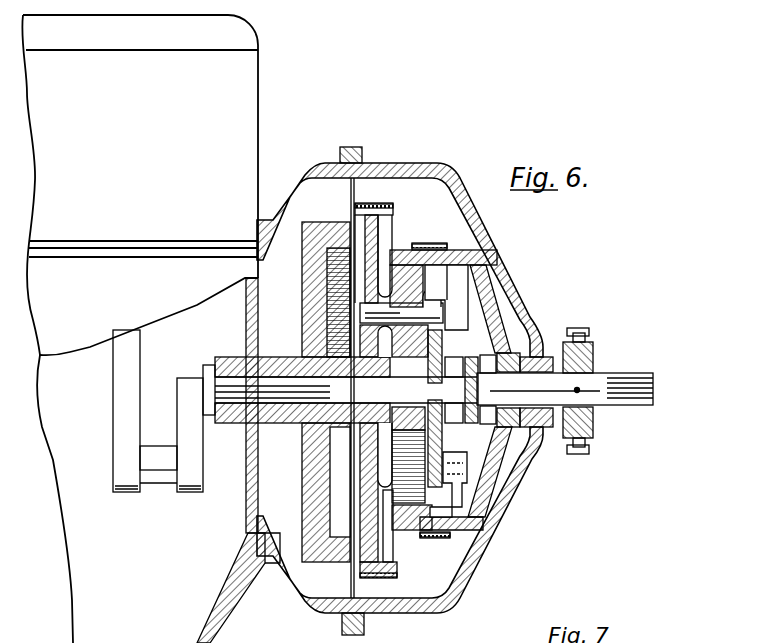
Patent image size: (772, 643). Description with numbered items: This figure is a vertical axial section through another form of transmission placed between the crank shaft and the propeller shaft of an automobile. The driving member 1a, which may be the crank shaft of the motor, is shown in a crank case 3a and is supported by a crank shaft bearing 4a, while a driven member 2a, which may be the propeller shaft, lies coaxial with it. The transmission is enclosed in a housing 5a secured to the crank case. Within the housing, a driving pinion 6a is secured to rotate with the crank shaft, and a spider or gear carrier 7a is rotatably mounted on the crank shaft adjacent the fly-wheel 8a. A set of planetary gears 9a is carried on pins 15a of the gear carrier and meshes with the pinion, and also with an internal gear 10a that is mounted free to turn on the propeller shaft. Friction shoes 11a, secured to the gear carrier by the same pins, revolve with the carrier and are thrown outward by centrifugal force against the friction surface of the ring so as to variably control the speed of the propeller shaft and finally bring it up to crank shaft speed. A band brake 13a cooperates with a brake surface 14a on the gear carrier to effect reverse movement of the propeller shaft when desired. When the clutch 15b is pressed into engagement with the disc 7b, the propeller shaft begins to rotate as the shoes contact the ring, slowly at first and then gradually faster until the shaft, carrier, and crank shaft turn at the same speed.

The driving member 1a is at (162, 481).
The driven member 2a is at (597, 377).
The crank case 3a is at (215, 617).
The crank shaft bearing 4a is at (236, 358).
The housing 5a is at (322, 168).
The driving pinion 6a is at (443, 433).
The gear carrier 7a is at (378, 240).
The disc 7b is at (440, 360).
The fly-wheel 8a is at (310, 280).
The planetary gears 9a is at (435, 283).
The internal gear 10a is at (445, 242).
The friction shoes 11a is at (445, 298).
The band brake 13a is at (376, 205).
The brake surface 14a is at (393, 212).
The pins 15a is at (470, 312).
The clutch 15b is at (520, 350).